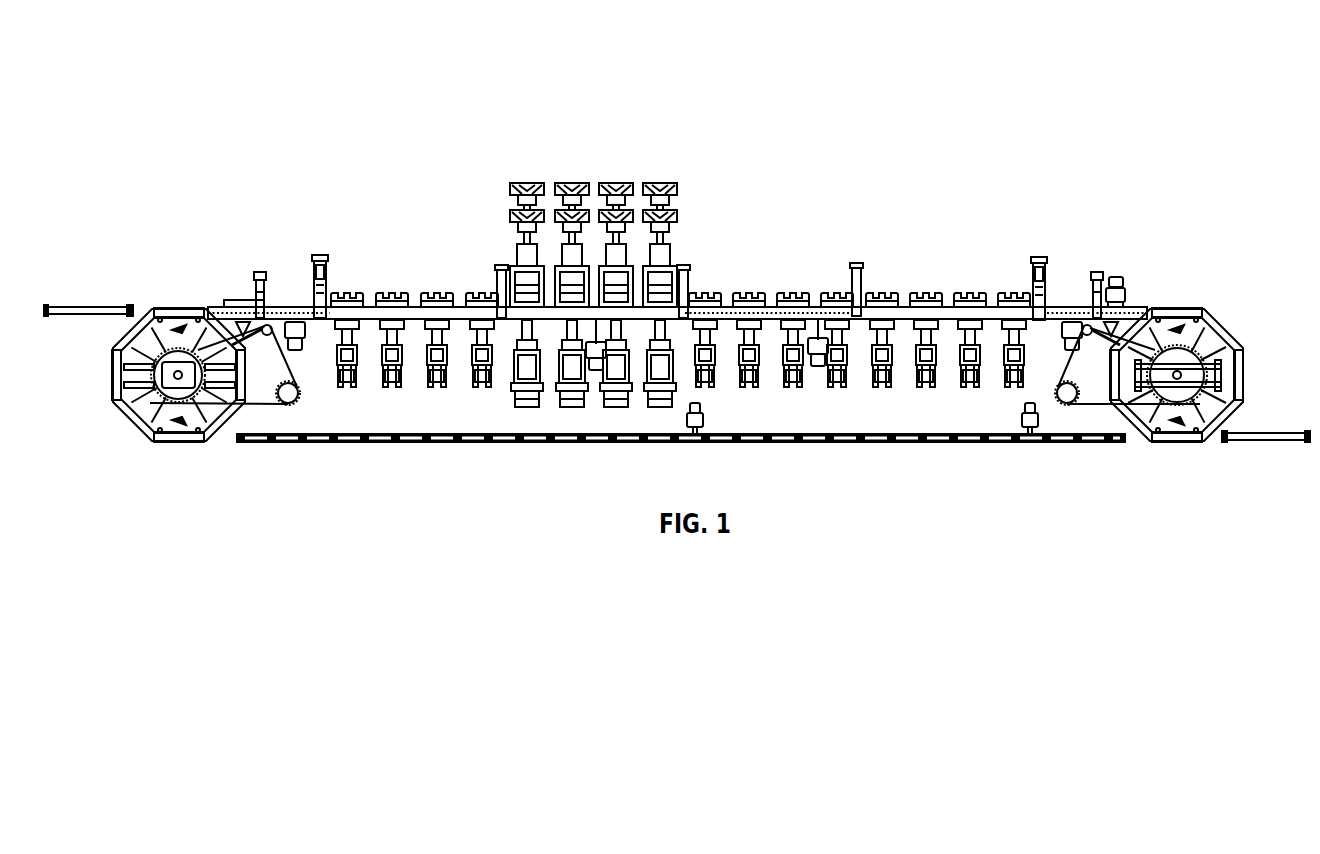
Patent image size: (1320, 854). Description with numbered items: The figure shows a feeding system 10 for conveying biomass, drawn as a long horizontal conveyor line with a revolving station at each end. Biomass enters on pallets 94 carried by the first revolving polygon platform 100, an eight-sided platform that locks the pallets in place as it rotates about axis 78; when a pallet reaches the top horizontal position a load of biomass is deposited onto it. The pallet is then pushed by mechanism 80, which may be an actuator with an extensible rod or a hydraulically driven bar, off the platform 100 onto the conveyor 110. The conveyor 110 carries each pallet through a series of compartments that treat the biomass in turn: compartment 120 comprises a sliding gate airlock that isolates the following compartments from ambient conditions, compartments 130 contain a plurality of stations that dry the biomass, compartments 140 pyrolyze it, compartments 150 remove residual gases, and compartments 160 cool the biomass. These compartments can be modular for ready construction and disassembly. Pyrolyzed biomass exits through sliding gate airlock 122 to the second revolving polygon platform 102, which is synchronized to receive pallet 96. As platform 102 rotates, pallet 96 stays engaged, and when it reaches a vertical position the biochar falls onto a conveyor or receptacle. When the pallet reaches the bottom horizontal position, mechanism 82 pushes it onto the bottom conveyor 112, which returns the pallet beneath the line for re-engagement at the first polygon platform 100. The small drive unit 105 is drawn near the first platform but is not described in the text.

The feeding system 10 is at (162, 60).
The axis 78 is at (180, 379).
The mechanism 80 is at (88, 300).
The mechanism 82 is at (1260, 428).
The pallets 94 is at (178, 300).
The pallet 96 is at (1178, 299).
The first revolving polygon platform 100 is at (125, 424).
The second revolving polygon platform 102 is at (1207, 443).
The drive motor 105 is at (307, 352).
The conveyor 110 is at (235, 302).
The bottom conveyor 112 is at (1000, 448).
The compartment 120 is at (253, 248).
The sliding gate airlock 122 is at (1032, 215).
The compartments 130 is at (332, 227).
The compartments 140 is at (508, 165).
The compartments 150 is at (690, 225).
The compartments 160 is at (1032, 225).